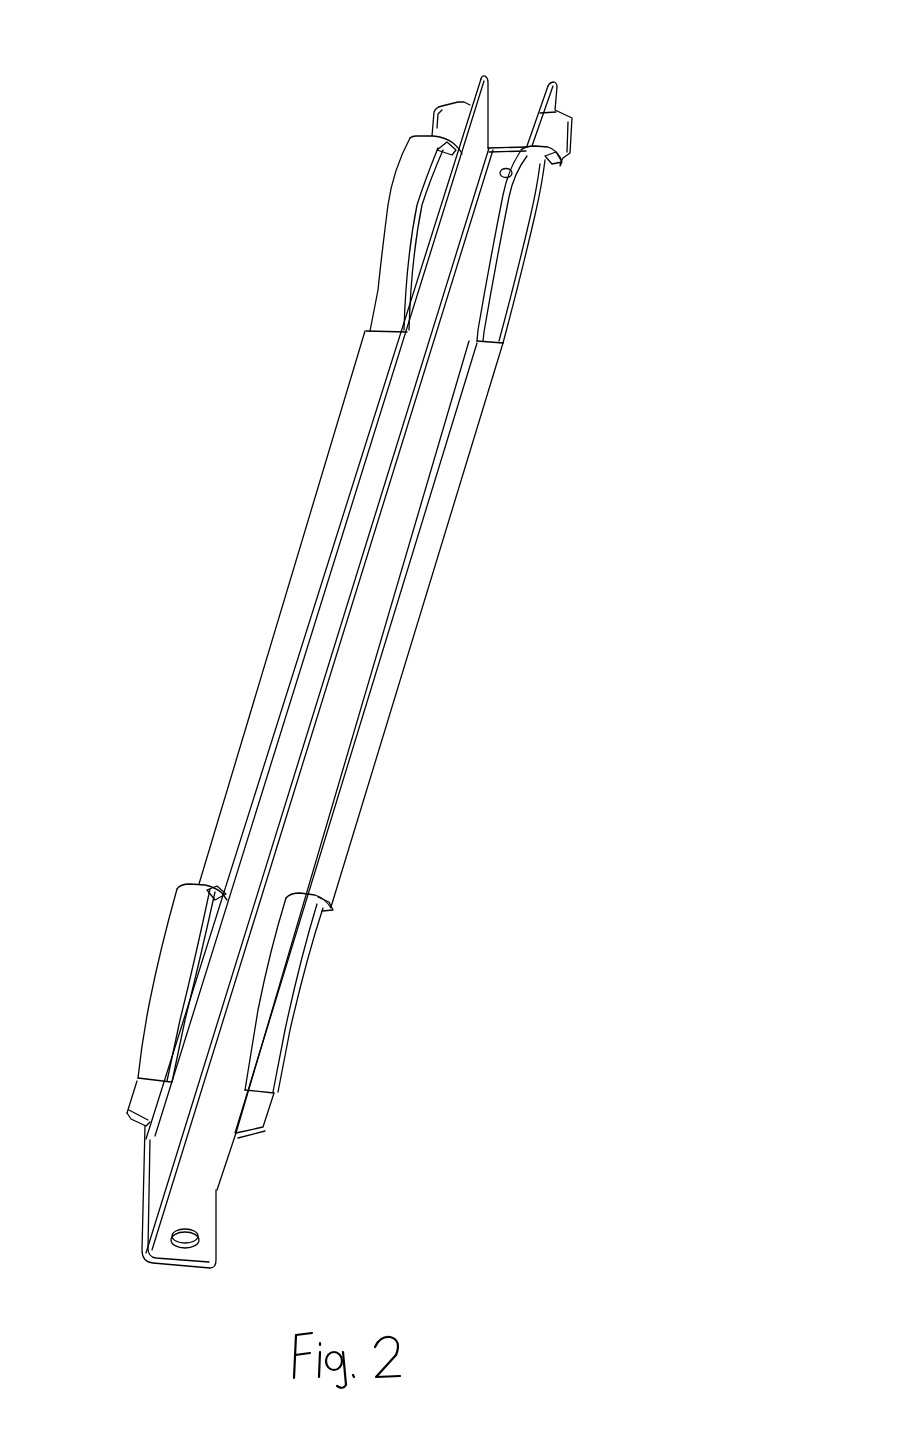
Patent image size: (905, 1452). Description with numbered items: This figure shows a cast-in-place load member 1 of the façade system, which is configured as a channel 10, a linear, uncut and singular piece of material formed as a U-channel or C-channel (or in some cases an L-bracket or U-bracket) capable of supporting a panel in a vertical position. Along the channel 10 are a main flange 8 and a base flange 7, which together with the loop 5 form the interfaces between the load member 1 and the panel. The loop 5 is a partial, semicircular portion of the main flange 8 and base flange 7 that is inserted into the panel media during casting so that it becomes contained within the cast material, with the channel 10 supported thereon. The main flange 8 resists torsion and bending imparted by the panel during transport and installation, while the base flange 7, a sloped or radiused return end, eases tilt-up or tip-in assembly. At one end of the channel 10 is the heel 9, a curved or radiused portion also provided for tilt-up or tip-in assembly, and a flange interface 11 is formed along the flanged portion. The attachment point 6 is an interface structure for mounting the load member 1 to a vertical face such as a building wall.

The load member 1 is at (245, 1180).
The loop 5 is at (407, 187).
The attachment point 6 is at (182, 1250).
The base flange 7 is at (128, 1118).
The main flange 8 is at (438, 568).
The heel 9 is at (481, 76).
The channel 10 is at (343, 694).
The flange interface 11 is at (358, 776).